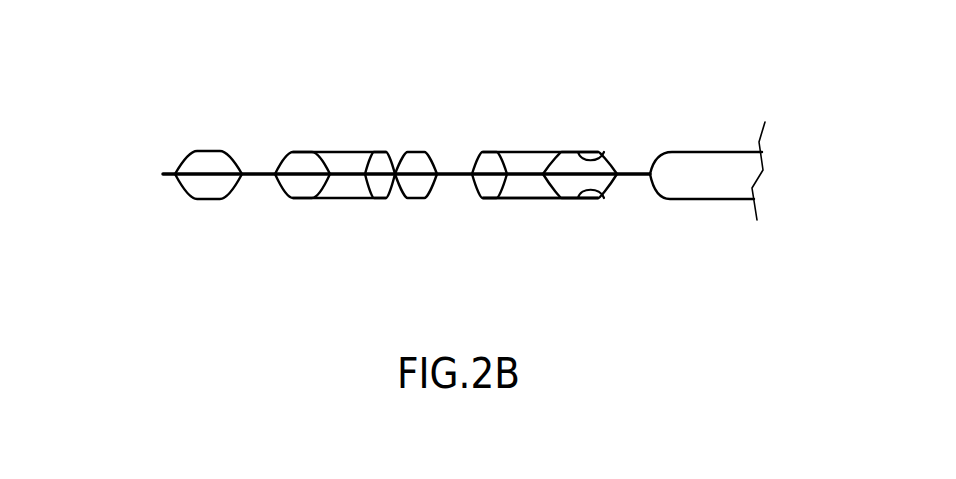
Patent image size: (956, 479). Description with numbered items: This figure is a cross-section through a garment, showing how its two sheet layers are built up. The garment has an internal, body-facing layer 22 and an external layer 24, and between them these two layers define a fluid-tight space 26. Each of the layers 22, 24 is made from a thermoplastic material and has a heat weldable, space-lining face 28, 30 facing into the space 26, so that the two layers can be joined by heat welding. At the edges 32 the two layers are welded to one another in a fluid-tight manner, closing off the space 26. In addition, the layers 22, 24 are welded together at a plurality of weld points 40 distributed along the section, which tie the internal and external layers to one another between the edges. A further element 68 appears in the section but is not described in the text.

The cylindrical lens element 22 is at (523, 152).
The cylinder body 24 is at (517, 201).
The cylindrical lens element 26 is at (307, 165).
The upper flange arc 28 is at (604, 158).
The lower flange arc 30 is at (607, 193).
The lens element 32 is at (172, 171).
The optical fiber / wire 40 is at (258, 177).
The lens element 68 is at (397, 165).